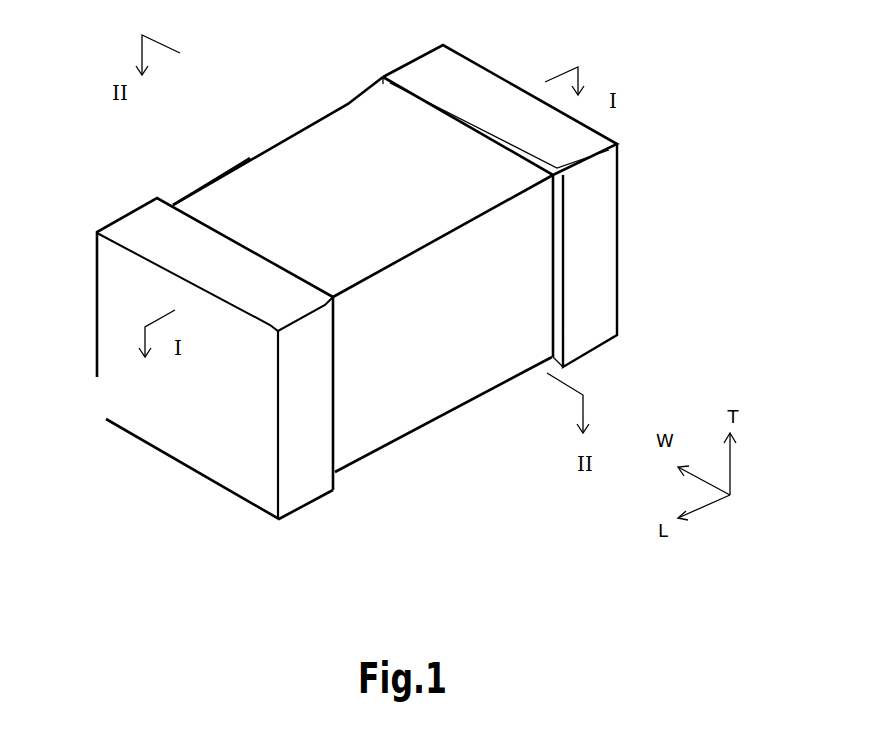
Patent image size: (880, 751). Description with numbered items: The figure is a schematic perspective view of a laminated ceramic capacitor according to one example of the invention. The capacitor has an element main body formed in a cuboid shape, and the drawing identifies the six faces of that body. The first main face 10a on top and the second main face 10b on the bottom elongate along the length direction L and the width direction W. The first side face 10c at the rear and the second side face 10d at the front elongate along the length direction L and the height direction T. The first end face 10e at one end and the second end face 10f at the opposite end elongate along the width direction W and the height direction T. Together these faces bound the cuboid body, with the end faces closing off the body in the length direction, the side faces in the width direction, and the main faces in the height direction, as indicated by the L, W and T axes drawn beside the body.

The first main face 10a is at (305, 158).
The second main face 10b is at (443, 413).
The first side face 10c is at (222, 178).
The second side face 10d is at (514, 284).
The first end face 10e is at (163, 382).
The second end face 10f is at (500, 73).